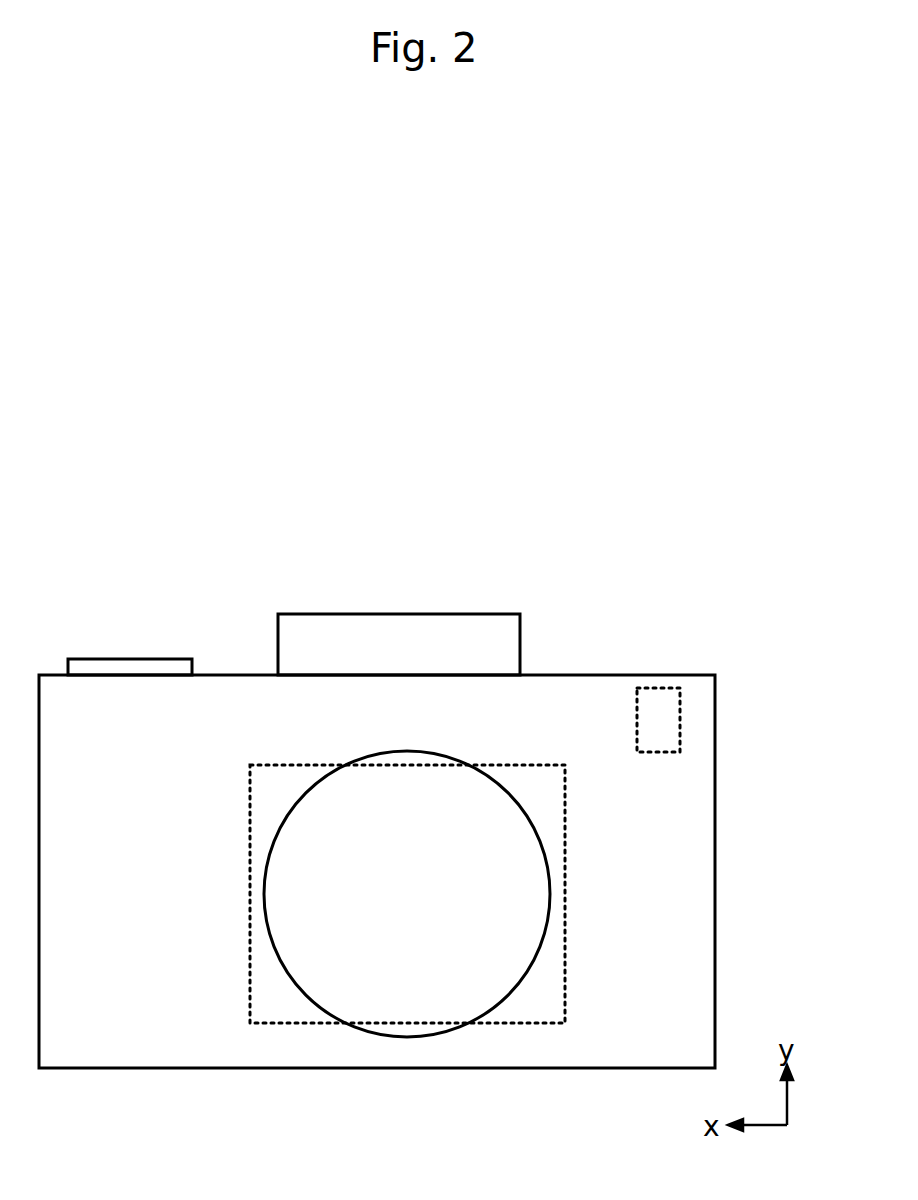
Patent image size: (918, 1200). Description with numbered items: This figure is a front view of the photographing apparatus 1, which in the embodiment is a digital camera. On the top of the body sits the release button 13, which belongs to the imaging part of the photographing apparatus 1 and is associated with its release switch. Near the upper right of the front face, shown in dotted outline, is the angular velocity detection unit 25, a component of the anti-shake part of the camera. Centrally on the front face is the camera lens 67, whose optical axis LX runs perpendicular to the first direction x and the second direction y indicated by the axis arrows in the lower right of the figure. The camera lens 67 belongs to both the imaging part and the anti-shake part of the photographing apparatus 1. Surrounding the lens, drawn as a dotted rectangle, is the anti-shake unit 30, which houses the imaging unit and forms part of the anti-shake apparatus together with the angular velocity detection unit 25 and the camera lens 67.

The photographing apparatus 1 is at (718, 672).
The release button 13 is at (112, 660).
The angular velocity detection unit 25 is at (668, 688).
The anti-shake unit 30 is at (250, 912).
The camera lens 67 is at (283, 825).